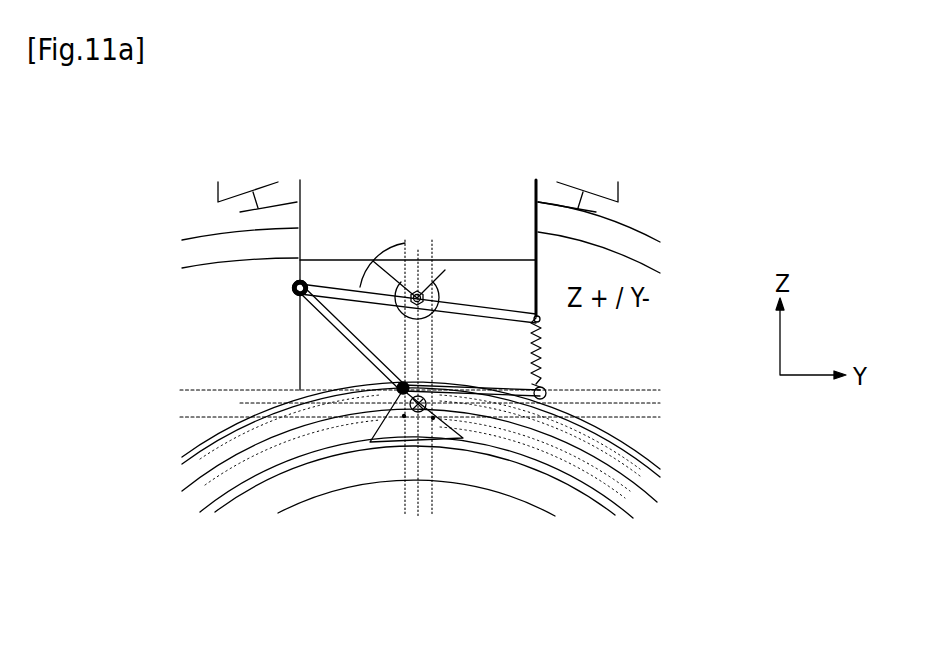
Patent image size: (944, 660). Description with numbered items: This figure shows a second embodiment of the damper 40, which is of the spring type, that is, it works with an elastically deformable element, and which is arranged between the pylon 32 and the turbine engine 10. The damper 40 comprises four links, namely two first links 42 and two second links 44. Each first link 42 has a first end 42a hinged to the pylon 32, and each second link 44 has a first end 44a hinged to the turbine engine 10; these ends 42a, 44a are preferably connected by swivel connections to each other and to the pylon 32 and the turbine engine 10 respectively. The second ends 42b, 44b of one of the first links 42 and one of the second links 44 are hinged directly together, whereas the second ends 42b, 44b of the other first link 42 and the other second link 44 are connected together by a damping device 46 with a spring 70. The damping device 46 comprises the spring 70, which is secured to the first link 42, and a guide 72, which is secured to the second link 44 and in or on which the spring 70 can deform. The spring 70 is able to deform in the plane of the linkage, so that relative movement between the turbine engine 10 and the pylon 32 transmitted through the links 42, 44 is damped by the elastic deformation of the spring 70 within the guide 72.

The turbine engine 10 is at (592, 513).
The pylon 32 is at (420, 188).
The damper 40 is at (230, 354).
The first link 42 is at (356, 292).
The first end of first link 42a is at (428, 296).
The second end of first link 42b is at (539, 313).
The second link 44 is at (350, 347).
The first end of second link 44a is at (401, 384).
The second end of second link 44b is at (560, 396).
The damping device 46 is at (612, 337).
The spring 70 is at (541, 370).
The guide 72 is at (547, 383).